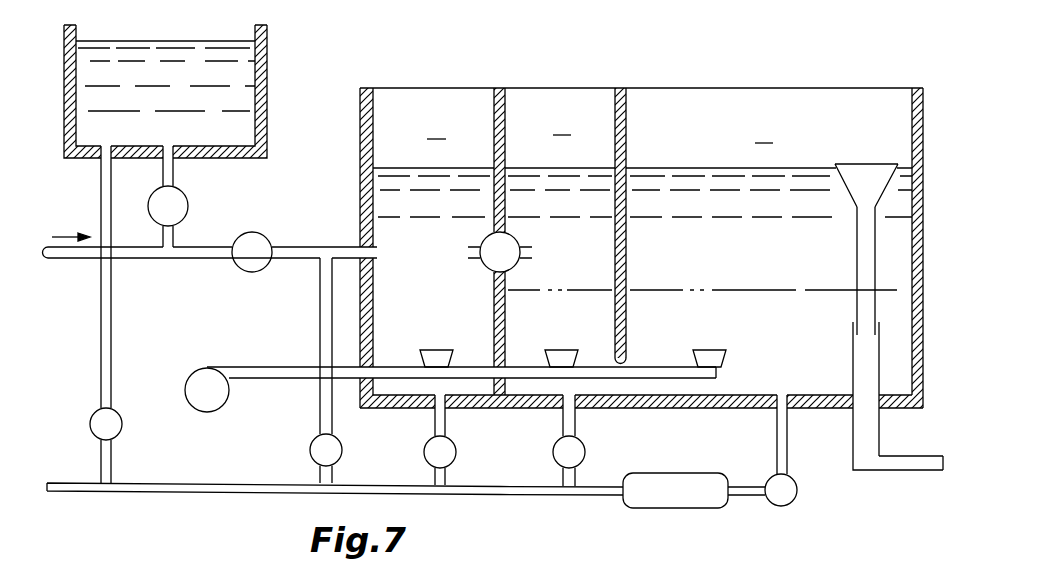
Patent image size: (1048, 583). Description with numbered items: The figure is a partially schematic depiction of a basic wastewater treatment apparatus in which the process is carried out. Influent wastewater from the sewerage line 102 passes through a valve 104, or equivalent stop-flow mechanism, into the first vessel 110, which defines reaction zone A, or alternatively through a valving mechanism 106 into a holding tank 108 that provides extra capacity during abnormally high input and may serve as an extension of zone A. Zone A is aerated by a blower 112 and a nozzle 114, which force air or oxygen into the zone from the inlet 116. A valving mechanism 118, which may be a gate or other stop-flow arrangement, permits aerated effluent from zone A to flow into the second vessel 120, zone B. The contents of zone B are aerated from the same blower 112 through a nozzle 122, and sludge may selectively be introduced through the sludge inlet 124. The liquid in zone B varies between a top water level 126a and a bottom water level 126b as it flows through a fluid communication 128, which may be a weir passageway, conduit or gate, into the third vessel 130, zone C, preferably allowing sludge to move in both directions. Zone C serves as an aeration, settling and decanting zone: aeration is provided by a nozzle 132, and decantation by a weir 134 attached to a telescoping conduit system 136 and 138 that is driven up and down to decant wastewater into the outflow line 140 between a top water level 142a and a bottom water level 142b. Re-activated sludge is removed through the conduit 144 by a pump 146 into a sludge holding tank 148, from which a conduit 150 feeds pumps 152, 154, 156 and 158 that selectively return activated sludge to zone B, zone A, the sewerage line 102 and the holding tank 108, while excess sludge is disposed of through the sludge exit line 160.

The sewerage line 102 is at (66, 259).
The valve 104 is at (268, 238).
The valving mechanism 106 is at (186, 212).
The holding tank 108 is at (270, 75).
The first vessel 110 is at (428, 88).
The blower 112 is at (205, 367).
The nozzle 114 is at (432, 352).
The inlet 116 is at (447, 406).
The valving mechanism 118 is at (480, 251).
The second vessel 120 is at (560, 88).
The nozzle 122 is at (563, 352).
The sludge inlet 124 is at (580, 406).
The top water level 126a is at (590, 172).
The bottom water level 126b is at (580, 280).
The fluid communication 128 is at (626, 363).
The third vessel 130 is at (770, 88).
The nozzle 132 is at (712, 352).
The weir 134 is at (862, 164).
The telescoping conduit 136 is at (857, 252).
The telescoping conduit 138 is at (853, 345).
The outflow line 140 is at (905, 470).
The top water level 142a is at (700, 172).
The bottom water level 142b is at (695, 276).
The conduit 144 is at (782, 395).
The pump 146 is at (790, 502).
The sludge holding tank 148 is at (662, 508).
The conduit 150 is at (580, 496).
The pump 152 is at (554, 453).
The pump 154 is at (425, 453).
The pump 156 is at (310, 448).
The pump 158 is at (122, 428).
The sludge exit line 160 is at (68, 492).